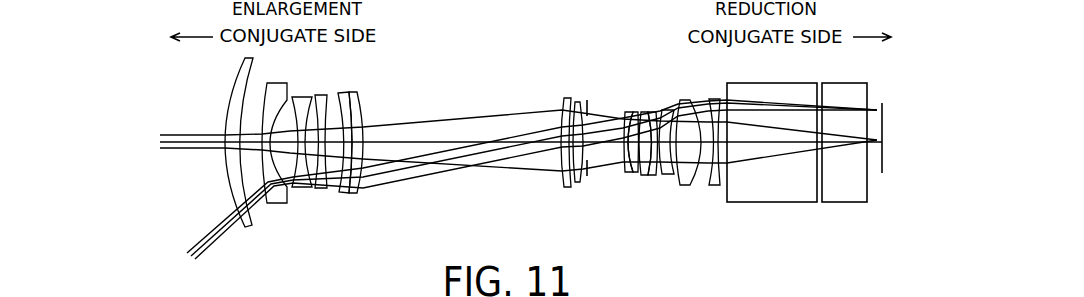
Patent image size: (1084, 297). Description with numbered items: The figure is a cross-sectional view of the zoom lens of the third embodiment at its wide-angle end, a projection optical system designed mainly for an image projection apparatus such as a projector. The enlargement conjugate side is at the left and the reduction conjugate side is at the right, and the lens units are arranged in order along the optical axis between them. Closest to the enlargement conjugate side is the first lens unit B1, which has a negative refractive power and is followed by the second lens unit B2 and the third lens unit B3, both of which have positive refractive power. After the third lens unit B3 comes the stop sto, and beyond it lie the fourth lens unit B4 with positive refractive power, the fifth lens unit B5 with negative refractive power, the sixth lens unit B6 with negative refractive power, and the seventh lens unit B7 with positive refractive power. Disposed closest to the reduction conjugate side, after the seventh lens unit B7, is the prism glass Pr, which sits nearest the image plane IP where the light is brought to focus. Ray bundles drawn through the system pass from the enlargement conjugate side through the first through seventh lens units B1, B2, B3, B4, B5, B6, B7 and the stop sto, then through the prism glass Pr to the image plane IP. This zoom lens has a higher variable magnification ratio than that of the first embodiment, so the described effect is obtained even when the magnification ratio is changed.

The first lens unit B1 is at (240, 233).
The second lens unit B2 is at (555, 190).
The third lens unit B3 is at (572, 190).
The fourth lens unit B4 is at (633, 192).
The fifth lens unit B5 is at (658, 192).
The sixth lens unit B6 is at (702, 192).
The seventh lens unit B7 is at (723, 192).
The stop sto is at (588, 101).
The prism glass Pr is at (727, 207).
The image plane IP is at (883, 112).